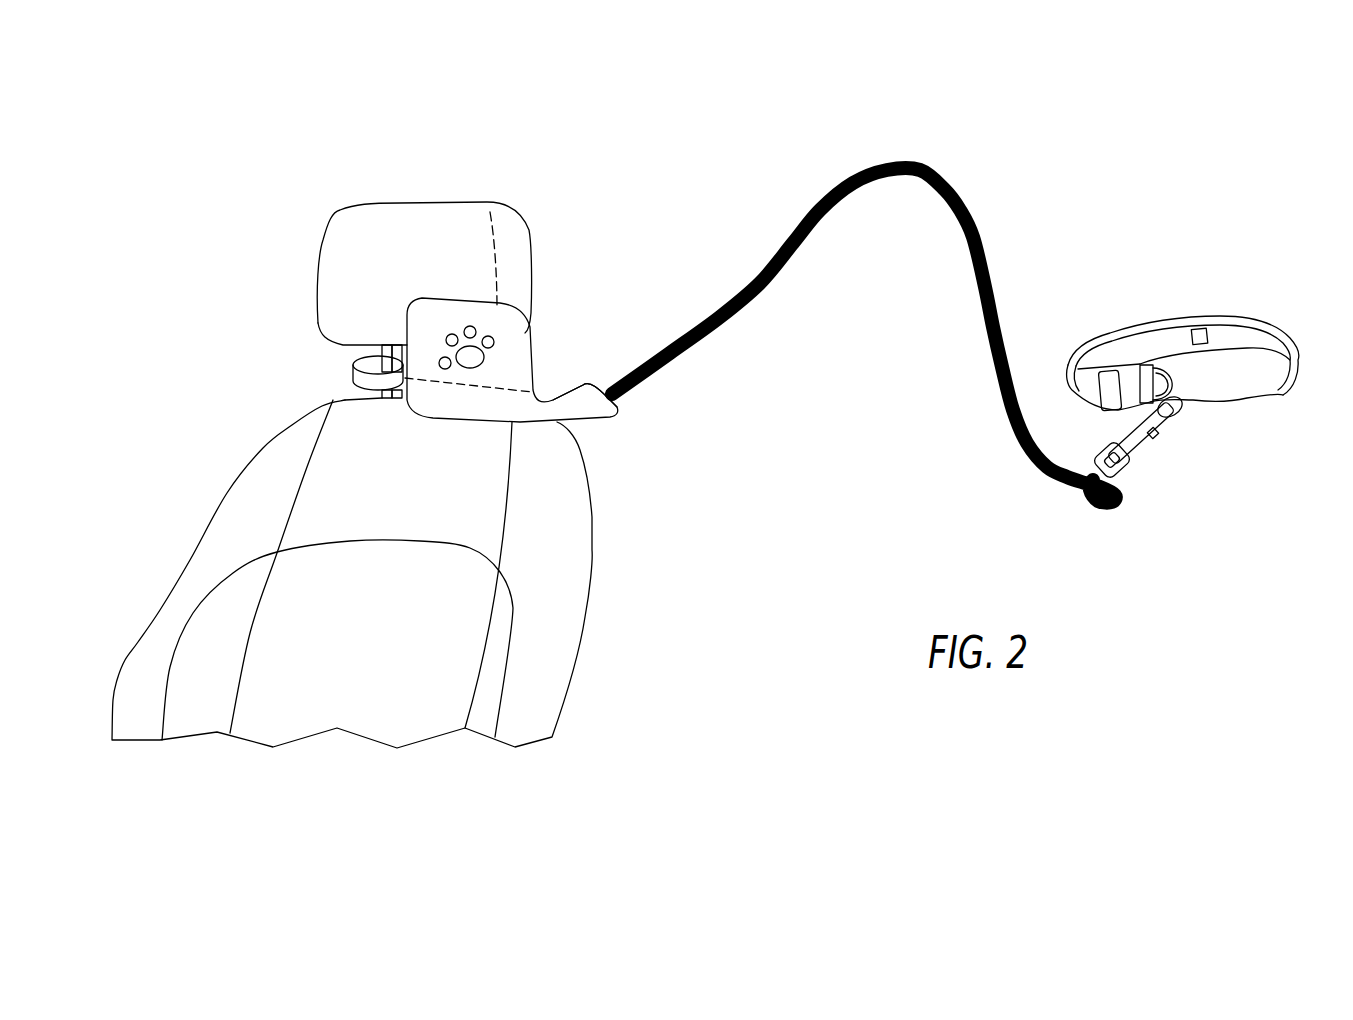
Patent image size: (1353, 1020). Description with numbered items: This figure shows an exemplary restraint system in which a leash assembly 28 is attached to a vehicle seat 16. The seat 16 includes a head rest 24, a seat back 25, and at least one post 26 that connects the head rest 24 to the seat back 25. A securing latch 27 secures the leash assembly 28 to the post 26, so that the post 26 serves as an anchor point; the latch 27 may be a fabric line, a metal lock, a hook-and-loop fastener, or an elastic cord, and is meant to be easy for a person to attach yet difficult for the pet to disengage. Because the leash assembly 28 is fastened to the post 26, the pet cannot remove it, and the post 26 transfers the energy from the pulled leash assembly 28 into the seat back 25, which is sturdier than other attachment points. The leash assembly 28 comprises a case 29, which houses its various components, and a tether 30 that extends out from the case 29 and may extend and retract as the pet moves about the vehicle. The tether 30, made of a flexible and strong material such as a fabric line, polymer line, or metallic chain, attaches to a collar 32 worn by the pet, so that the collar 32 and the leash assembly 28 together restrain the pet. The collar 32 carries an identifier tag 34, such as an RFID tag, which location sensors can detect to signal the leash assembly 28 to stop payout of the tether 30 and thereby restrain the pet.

The seat 16 is at (462, 613).
The head rest 24 is at (352, 227).
The seat back 25 is at (573, 535).
The post 26 is at (385, 350).
The securing latch 27 is at (347, 377).
The leash assembly 28 is at (430, 427).
The case 29 is at (600, 390).
The tether 30 is at (925, 165).
The collar 32 is at (1215, 410).
The identifier tag 34 is at (1203, 328).